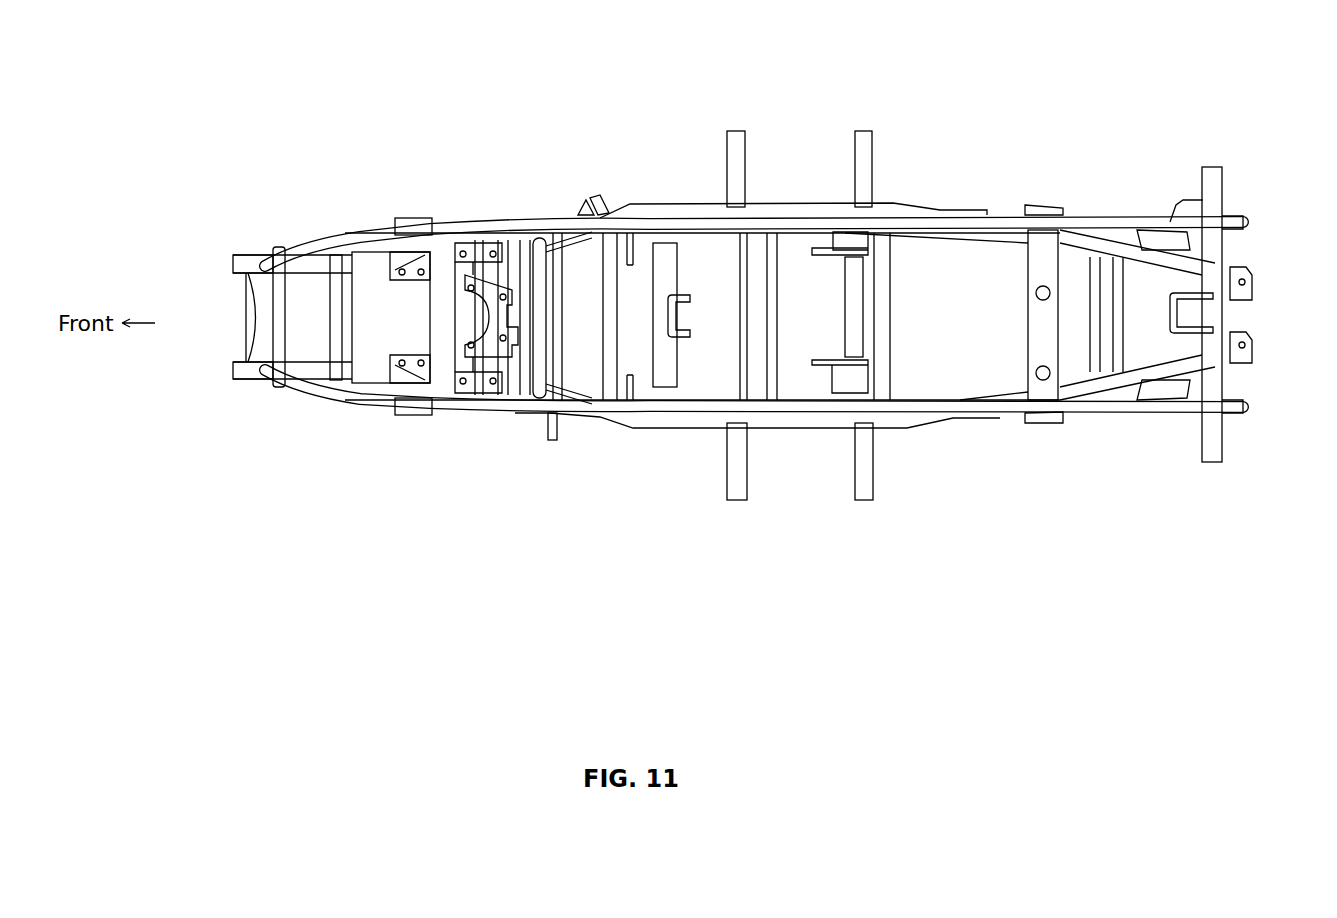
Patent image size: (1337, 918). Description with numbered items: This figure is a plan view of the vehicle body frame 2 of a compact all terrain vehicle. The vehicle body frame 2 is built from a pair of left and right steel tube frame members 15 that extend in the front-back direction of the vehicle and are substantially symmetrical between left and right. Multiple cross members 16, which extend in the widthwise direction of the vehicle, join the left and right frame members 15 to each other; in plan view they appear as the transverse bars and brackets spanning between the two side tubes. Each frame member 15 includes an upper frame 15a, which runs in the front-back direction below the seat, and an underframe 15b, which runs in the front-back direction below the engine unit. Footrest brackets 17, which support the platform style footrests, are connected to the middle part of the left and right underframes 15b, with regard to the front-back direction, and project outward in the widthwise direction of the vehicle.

The vehicle body frame 2 is at (323, 198).
The frame members 15 is at (491, 214).
The upper frame 15a is at (392, 224).
The underframe 15b is at (241, 255).
The cross members 16 is at (355, 320).
The footrest brackets 17 is at (853, 148).